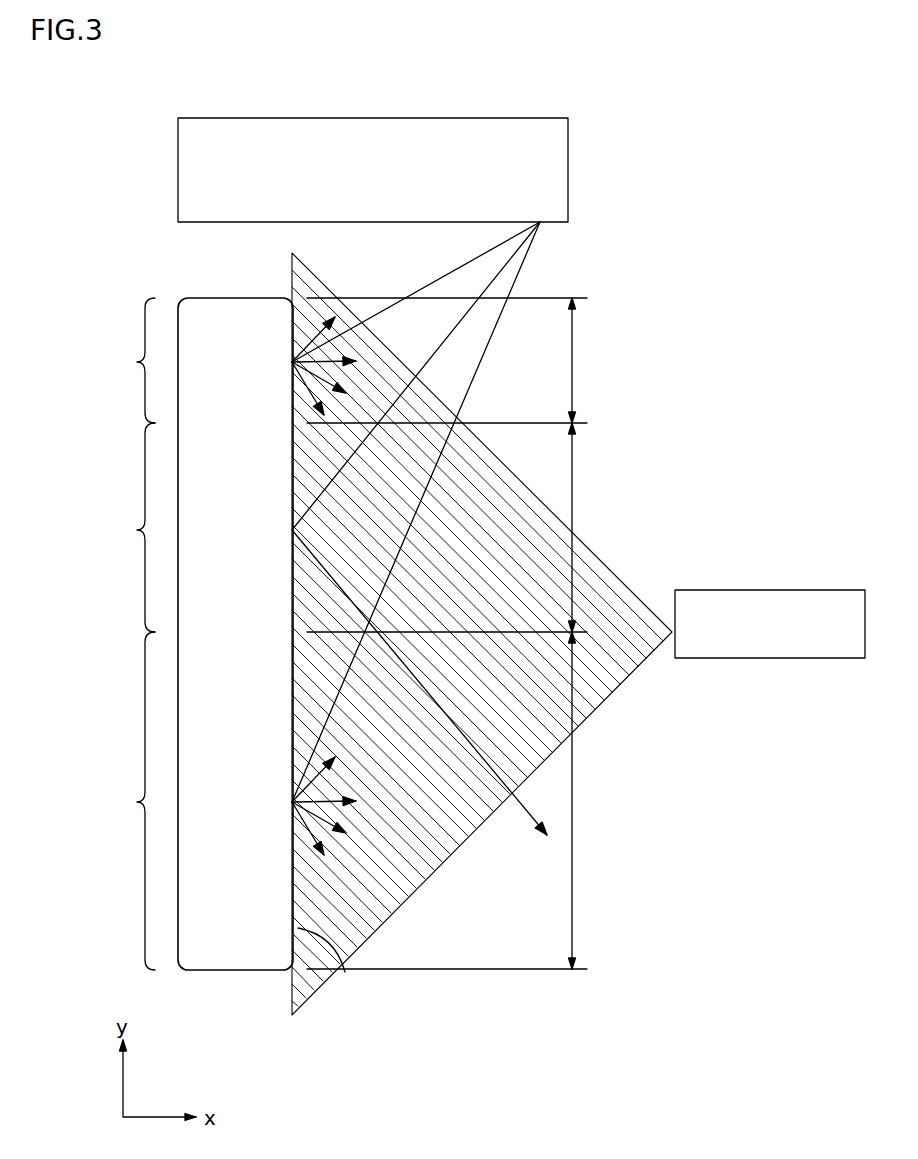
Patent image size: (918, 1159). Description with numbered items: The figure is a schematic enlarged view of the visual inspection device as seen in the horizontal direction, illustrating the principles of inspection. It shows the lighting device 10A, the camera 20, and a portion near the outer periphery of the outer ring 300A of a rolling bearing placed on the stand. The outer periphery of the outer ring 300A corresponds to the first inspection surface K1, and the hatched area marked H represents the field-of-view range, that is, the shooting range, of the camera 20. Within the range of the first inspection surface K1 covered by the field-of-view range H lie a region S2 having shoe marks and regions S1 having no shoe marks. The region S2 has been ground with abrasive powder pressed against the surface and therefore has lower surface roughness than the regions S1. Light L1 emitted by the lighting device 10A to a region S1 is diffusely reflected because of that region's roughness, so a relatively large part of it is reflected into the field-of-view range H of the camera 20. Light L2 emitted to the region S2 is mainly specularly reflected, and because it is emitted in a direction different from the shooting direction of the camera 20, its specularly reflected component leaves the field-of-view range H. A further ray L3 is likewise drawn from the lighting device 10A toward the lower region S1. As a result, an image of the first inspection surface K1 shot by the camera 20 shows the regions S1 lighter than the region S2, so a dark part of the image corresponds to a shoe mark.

The lighting device 10A is at (214, 118).
The camera 20 is at (700, 590).
The outer ring 300A is at (233, 930).
The light L1 is at (416, 318).
The light L2 is at (419, 528).
The third light ray L3 is at (416, 538).
The field-of-view range H is at (607, 694).
The first inspection surface K1 is at (345, 972).
The region having no shoe marks S1 is at (356, 634).
The region having shoe marks S2 is at (356, 527).